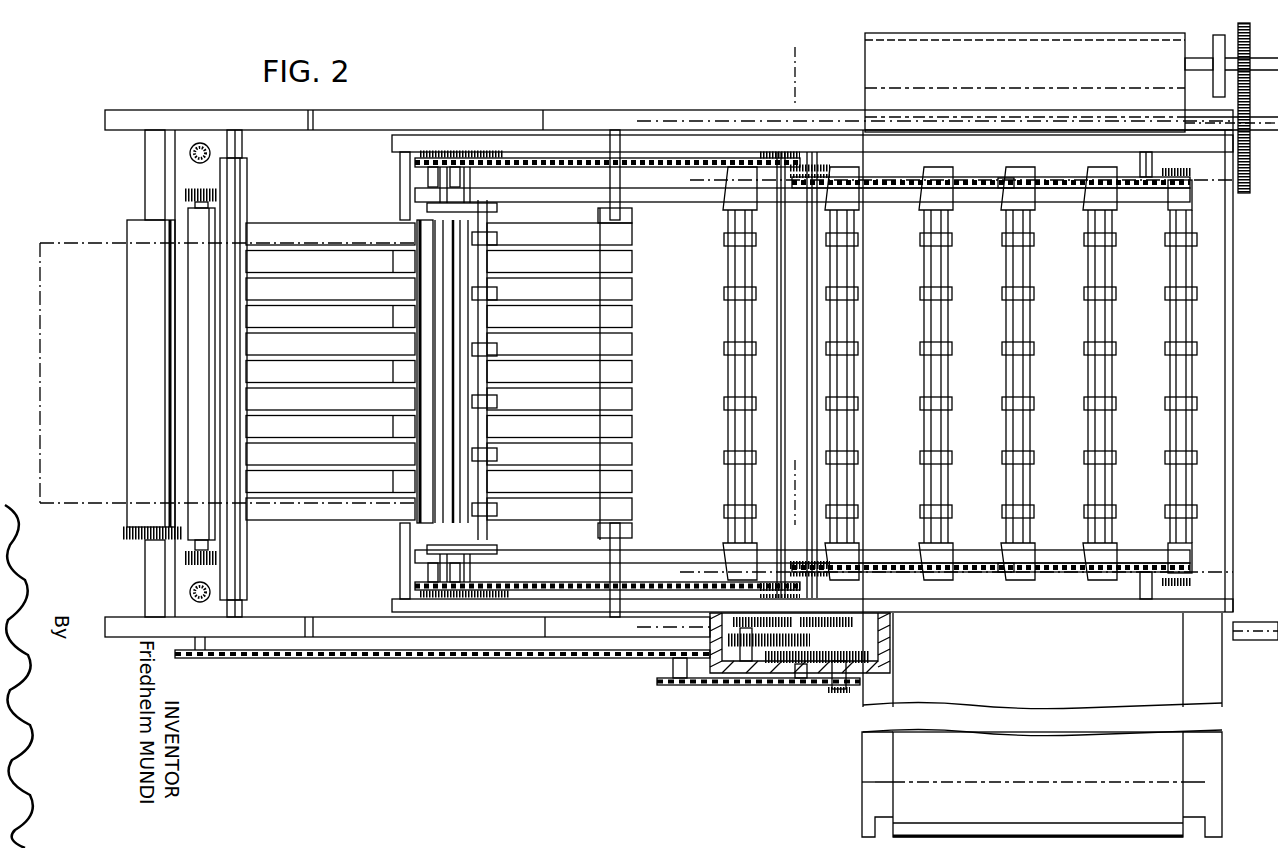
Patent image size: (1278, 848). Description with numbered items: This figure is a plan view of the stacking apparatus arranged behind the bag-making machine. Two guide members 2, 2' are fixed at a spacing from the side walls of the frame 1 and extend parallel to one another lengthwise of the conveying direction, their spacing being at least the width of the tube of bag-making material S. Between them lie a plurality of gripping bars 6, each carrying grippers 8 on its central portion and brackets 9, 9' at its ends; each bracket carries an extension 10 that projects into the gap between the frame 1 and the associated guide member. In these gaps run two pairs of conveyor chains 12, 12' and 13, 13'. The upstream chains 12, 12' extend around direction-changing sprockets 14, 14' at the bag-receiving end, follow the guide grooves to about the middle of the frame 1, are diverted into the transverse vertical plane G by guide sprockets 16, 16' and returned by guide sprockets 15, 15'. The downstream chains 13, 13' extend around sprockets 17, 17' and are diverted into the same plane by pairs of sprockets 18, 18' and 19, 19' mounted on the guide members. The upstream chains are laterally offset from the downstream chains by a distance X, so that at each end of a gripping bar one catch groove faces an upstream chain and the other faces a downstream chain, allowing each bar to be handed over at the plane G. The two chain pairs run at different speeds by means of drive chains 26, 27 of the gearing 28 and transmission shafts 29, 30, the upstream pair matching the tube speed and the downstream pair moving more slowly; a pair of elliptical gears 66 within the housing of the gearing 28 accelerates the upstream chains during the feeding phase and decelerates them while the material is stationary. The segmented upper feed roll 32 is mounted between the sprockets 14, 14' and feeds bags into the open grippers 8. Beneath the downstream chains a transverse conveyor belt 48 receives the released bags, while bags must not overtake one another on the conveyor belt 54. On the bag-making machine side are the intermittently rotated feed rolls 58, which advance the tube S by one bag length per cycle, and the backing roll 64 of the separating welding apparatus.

The frame 1 is at (685, 143).
The guide member 2 is at (802, 544).
The guide member 2' is at (802, 213).
The gripping bars 6 is at (945, 330).
The grippers 8 is at (497, 350).
The bracket 9 is at (1003, 549).
The bracket 9' is at (1004, 210).
The extension 10 is at (1192, 185).
The upstream conveyor chain 12 is at (607, 560).
The upstream conveyor chain 12' is at (607, 124).
The downstream conveyor chain 13 is at (988, 547).
The downstream conveyor chain 13' is at (989, 210).
The direction-changing sprocket 14 is at (411, 569).
The direction-changing sprocket 14' is at (407, 181).
The guide sprocket 15 is at (710, 653).
The guide sprocket 16 is at (710, 653).
The guide sprocket 15' is at (754, 118).
The guide sprocket 16' is at (754, 118).
The sprocket 17 is at (1148, 561).
The sprocket 17' is at (1151, 197).
The sprocket 18 is at (883, 607).
The sprocket 19 is at (883, 607).
The sprocket 18' is at (836, 129).
The sprocket 19' is at (836, 129).
The drive chain 26 is at (453, 658).
The drive chain 27 is at (733, 685).
The gearing 28 is at (880, 668).
The transmission shaft 29 is at (778, 305).
The transmission shaft 30 is at (810, 385).
The feed roll 32 is at (422, 290).
The transverse conveyor belt 48 is at (1175, 755).
The conveyor belt 54 is at (632, 385).
The feed rolls 58 is at (145, 325).
The backing roll 64 is at (200, 405).
The elliptical gears 66 is at (835, 665).
The transverse vertical plane G is at (795, 286).
The tube of bag-making material S is at (70, 503).
The lateral offset distance X is at (690, 178).